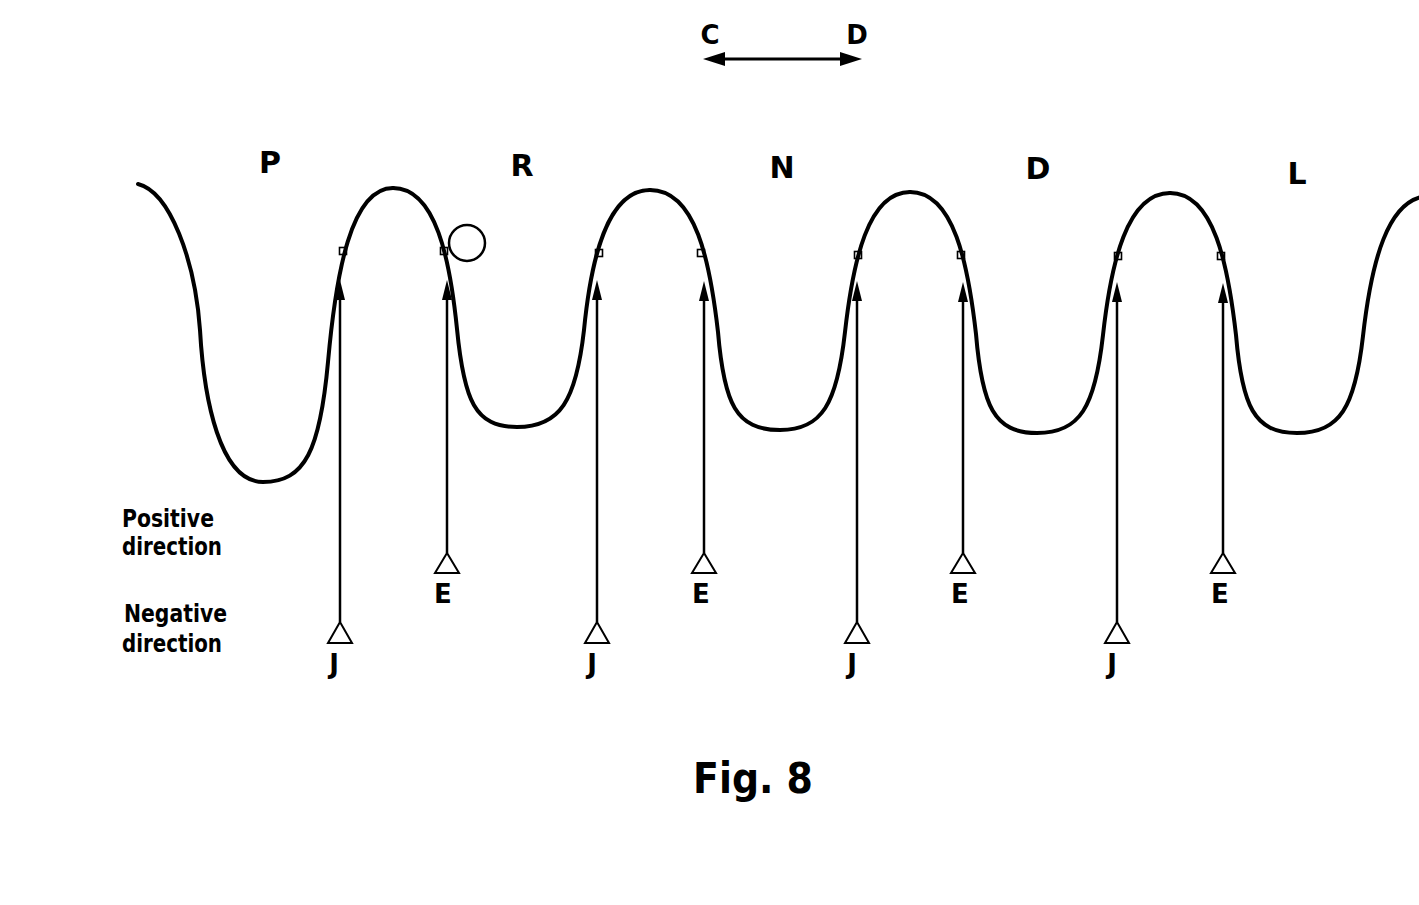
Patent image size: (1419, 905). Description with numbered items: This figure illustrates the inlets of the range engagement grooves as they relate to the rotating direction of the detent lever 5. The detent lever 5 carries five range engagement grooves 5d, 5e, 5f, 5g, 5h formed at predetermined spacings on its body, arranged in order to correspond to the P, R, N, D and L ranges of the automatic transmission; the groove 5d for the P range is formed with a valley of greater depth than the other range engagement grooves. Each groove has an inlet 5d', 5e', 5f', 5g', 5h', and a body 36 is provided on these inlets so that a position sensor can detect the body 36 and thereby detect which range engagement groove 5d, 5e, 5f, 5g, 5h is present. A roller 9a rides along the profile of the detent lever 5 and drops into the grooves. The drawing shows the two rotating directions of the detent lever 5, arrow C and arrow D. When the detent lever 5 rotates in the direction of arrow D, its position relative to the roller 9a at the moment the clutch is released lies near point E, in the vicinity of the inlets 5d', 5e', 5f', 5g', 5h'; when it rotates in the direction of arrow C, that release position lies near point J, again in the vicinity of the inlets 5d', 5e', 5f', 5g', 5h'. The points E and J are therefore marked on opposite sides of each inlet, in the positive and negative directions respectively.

The detent lever 5 is at (778, 293).
The range engagement groove 5d is at (265, 333).
The range engagement groove 5e is at (521, 307).
The range engagement groove 5f is at (780, 310).
The range engagement groove 5g is at (1040, 312).
The range engagement groove 5h is at (1294, 313).
The inlet 5d' is at (293, 282).
The inlet 5e' is at (522, 284).
The inlet 5f' is at (780, 286).
The inlet 5g' is at (1040, 288).
The inlet 5h' is at (1270, 290).
The roller 9a is at (462, 225).
The body 36 is at (440, 251).